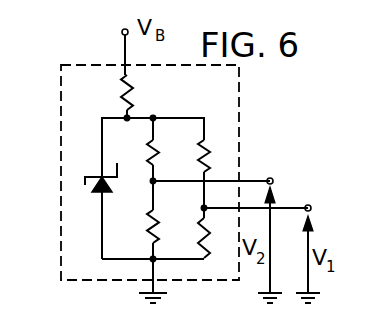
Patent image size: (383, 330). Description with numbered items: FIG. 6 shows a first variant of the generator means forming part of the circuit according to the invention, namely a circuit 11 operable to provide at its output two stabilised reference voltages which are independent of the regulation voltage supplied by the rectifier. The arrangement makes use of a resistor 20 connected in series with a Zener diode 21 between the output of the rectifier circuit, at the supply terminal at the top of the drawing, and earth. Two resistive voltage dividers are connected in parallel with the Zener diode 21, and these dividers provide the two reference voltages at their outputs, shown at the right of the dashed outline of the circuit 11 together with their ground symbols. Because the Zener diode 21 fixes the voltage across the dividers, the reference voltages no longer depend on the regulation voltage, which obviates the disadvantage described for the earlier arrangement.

The circuit 11 is at (60, 146).
The resistor 20 is at (133, 94).
The Zener diode 21 is at (93, 194).